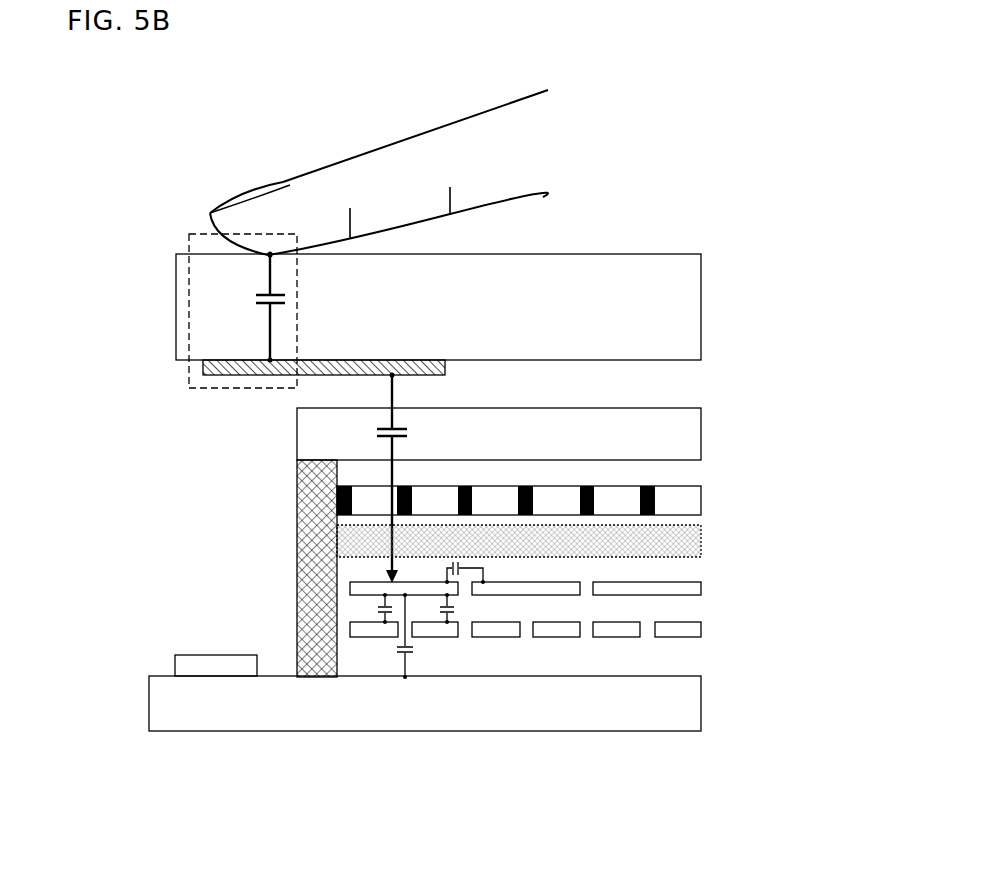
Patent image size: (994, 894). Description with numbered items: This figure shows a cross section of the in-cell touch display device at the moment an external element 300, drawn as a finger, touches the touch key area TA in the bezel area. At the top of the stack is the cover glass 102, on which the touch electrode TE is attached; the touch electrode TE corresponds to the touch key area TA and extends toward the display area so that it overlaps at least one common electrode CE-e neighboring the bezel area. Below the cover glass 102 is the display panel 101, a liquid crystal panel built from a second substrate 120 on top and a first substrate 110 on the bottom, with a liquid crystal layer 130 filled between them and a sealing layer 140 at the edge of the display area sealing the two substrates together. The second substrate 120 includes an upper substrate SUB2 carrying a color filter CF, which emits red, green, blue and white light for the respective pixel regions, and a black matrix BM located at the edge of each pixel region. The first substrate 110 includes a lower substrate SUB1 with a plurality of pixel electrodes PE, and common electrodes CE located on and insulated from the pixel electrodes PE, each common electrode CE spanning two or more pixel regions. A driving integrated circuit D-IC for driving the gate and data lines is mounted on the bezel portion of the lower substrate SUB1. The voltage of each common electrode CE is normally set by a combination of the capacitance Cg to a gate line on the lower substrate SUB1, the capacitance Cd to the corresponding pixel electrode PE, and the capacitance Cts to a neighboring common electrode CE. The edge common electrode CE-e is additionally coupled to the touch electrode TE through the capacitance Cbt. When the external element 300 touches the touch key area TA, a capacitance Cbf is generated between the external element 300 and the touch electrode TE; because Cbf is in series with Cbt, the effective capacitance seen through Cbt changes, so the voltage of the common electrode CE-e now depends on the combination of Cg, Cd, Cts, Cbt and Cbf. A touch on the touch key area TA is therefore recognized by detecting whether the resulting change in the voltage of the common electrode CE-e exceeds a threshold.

The external element 300 is at (286, 166).
The touch key area TA is at (181, 240).
The cover glass 102 is at (701, 303).
The capacitance between external element and touch electrode Cbf is at (251, 307).
The touch electrode TE is at (203, 368).
The capacitance between common electrode and touch electrode Cbt is at (372, 478).
The display panel 101 is at (530, 569).
The second substrate 120 is at (577, 461).
The upper substrate SUB2 is at (701, 440).
The color filter CF is at (494, 486).
The black matrix BM is at (524, 486).
The liquid crystal layer 130 is at (703, 543).
The sealing layer 140 is at (297, 553).
The first substrate 110 is at (500, 646).
The common electrode CE is at (482, 591).
The common electrode neighboring the bezel area CE-e is at (350, 585).
The pixel electrode PE is at (701, 628).
The capacitance between common electrode and pixel electrode Cd is at (415, 608).
The capacitance between common electrode and gate line Cg is at (394, 636).
The capacitance between neighboring common electrodes Cts is at (451, 573).
The lower substrate SUB1 is at (701, 705).
The driving integrated circuit D-IC is at (175, 665).